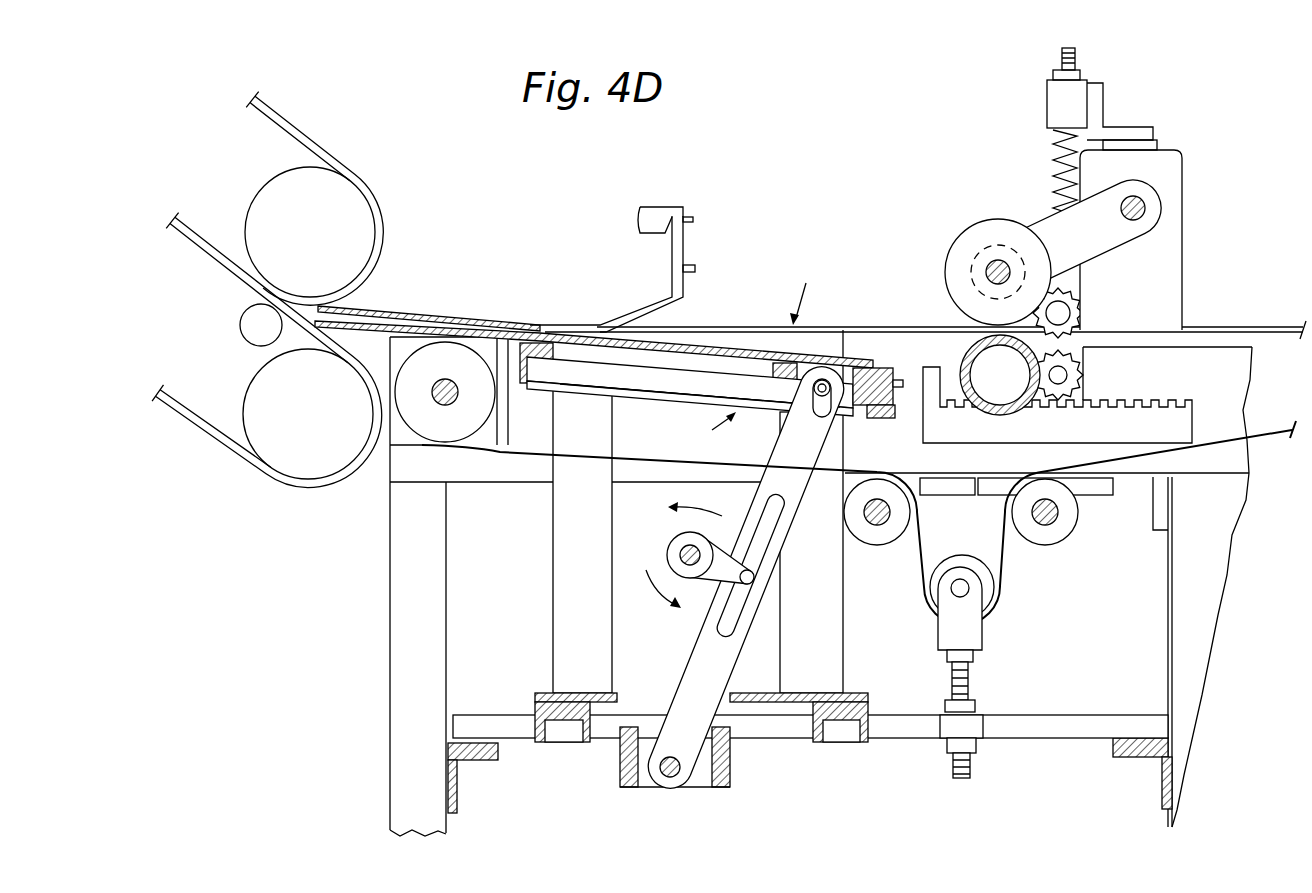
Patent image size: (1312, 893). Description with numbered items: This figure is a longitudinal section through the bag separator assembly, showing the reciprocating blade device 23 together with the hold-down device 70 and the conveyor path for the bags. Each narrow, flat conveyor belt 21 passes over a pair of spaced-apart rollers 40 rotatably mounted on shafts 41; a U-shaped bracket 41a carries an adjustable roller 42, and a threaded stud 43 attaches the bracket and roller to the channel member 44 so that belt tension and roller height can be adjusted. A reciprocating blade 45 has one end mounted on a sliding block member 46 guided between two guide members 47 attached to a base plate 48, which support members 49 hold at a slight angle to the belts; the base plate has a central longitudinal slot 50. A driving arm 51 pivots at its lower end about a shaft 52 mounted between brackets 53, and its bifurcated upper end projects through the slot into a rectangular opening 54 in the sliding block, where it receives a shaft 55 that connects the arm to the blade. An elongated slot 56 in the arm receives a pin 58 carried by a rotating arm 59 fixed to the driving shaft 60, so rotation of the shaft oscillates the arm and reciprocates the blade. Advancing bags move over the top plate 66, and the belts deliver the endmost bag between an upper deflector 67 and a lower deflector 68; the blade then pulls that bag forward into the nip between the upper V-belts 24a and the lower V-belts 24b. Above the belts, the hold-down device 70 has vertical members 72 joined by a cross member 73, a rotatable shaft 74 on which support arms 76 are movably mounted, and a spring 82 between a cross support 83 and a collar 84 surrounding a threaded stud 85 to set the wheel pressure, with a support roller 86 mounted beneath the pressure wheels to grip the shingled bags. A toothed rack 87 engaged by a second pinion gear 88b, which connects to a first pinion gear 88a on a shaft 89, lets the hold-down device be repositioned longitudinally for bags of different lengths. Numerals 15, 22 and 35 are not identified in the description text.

The web 15 is at (806, 291).
The conveyor belt 21 is at (1215, 332).
The roller 22 is at (458, 367).
The reciprocating blade device 23 is at (713, 426).
The upper V-belts 24a is at (382, 218).
The lower V-belts 24b is at (344, 480).
The roller shaft 35 is at (446, 404).
The roller 40 is at (1030, 530).
The shaft 41 is at (1040, 514).
The U-shaped bracket 41a is at (978, 640).
The adjustable roller 42 is at (988, 585).
The threaded stud 43 is at (968, 672).
The channel member 44 is at (1046, 716).
The reciprocating blade 45 is at (636, 404).
The sliding block member 46 is at (880, 376).
The guide member 47 is at (592, 372).
The base plate 48 is at (880, 422).
The support member 49 is at (592, 572).
The slot 50 is at (672, 398).
The driving arm 51 is at (688, 660).
The shaft 52 is at (672, 780).
The bracket 53 is at (732, 774).
The rectangular shaped opening 54 is at (840, 380).
The shaft 55 is at (823, 380).
The elongated slot 56 is at (762, 512).
The pin 58 is at (754, 580).
The rotating arm 59 is at (702, 598).
The driving shaft 60 is at (684, 546).
The top plate 66 is at (712, 328).
The upper deflector 67 is at (463, 312).
The lower deflector 68 is at (405, 324).
The hold-down device 70 is at (1092, 184).
The vertical member 72 is at (1172, 283).
The cross member 73 is at (1165, 146).
The rotatable shaft 74 is at (1150, 202).
The support arm 76 is at (1140, 233).
The spring 82 is at (1053, 146).
The cross support 83 is at (1088, 238).
The collar 84 is at (1047, 100).
The threaded stud 85 is at (1078, 58).
The support roller 86 is at (996, 414).
The toothed rack 87 is at (1150, 402).
The first pinion gear 88a is at (1093, 314).
The second pinion gear 88b is at (1085, 371).
The shaft 89 is at (1068, 311).